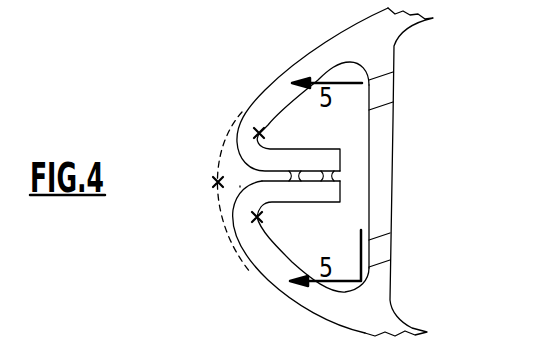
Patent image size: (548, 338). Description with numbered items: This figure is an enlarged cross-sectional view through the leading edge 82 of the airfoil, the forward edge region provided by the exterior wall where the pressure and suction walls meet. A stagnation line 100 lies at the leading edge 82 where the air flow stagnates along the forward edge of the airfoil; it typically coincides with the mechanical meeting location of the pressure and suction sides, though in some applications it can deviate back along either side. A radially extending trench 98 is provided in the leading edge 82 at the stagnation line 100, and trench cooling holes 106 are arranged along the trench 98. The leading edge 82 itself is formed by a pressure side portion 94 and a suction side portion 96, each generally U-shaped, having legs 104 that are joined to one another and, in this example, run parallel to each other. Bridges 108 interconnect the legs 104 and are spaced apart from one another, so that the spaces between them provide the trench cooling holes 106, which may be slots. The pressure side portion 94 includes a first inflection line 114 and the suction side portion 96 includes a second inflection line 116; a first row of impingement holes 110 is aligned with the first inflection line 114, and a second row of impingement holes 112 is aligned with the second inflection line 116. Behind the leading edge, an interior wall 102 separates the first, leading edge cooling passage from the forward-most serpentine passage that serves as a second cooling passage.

The leading edge 82 is at (244, 97).
The pressure side portion 94 is at (278, 267).
The suction side portion 96 is at (300, 72).
The trench 98 is at (240, 186).
The stagnation line 100 is at (217, 182).
The interior wall 102 is at (383, 171).
The legs 104 is at (294, 156).
The trench cooling holes 106 is at (333, 176).
The bridges 108 is at (303, 181).
The first row of impingement holes 110 is at (378, 260).
The second row of impingement holes 112 is at (382, 90).
The first inflection line 114 is at (256, 218).
The second inflection line 116 is at (257, 134).